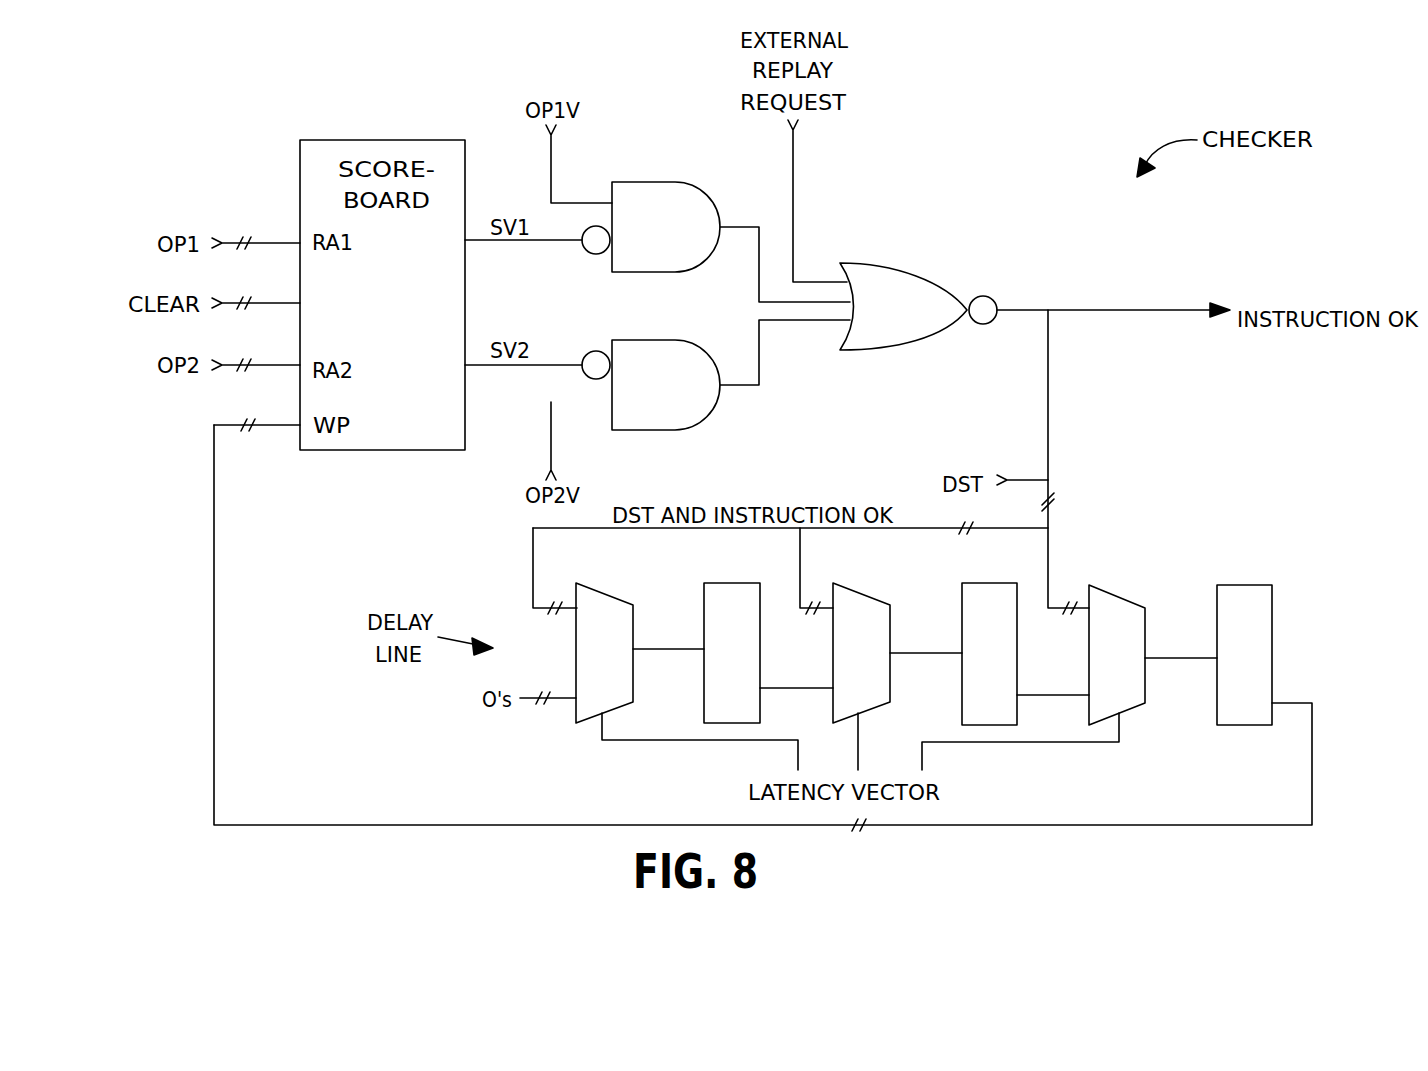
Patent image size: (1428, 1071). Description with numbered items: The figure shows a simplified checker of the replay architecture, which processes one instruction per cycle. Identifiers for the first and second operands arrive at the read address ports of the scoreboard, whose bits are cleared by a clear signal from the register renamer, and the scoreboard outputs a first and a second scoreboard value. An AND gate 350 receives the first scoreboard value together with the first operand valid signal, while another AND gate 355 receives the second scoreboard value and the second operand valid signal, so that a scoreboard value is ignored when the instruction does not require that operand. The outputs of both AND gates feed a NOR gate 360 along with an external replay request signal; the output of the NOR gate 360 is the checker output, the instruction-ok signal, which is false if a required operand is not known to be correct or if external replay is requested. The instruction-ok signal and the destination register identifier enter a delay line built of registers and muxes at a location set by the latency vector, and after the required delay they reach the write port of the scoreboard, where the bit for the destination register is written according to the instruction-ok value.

The AND gate 350 is at (677, 240).
The AND gate 355 is at (677, 396).
The NOR gate 360 is at (912, 318).